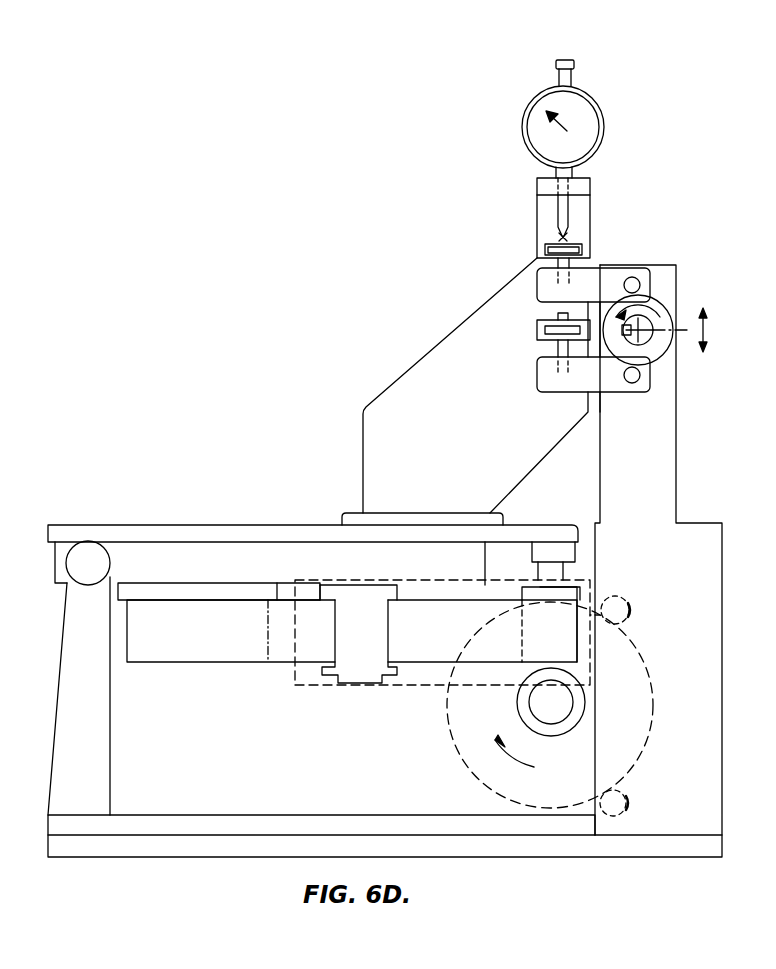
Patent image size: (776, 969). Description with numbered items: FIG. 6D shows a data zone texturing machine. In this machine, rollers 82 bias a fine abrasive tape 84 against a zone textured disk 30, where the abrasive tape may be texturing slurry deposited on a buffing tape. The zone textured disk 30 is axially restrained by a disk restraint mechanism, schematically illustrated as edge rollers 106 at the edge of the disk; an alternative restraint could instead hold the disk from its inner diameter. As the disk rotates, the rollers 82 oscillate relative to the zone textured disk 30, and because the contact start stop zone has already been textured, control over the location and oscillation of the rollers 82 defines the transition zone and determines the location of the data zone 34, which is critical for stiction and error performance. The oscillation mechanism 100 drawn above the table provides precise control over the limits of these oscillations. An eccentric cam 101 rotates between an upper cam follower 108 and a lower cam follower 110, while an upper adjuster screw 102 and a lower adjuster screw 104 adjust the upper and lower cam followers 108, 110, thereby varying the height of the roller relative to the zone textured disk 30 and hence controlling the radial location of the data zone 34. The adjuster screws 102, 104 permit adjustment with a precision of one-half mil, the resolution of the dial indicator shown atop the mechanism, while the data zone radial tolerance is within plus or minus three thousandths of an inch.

The oscillation mechanism 100 is at (692, 147).
The eccentric cam 101 is at (660, 316).
The upper adjuster screw 102 is at (592, 250).
The lower adjuster screw 104 is at (537, 330).
The upper cam follower 108 is at (638, 277).
The lower cam follower 110 is at (642, 373).
The rollers 82 is at (572, 588).
The fine abrasive tape 84 is at (242, 650).
The zone textured disk 30 is at (485, 787).
The data zone 34 is at (478, 740).
The edge rollers 106 is at (622, 597).